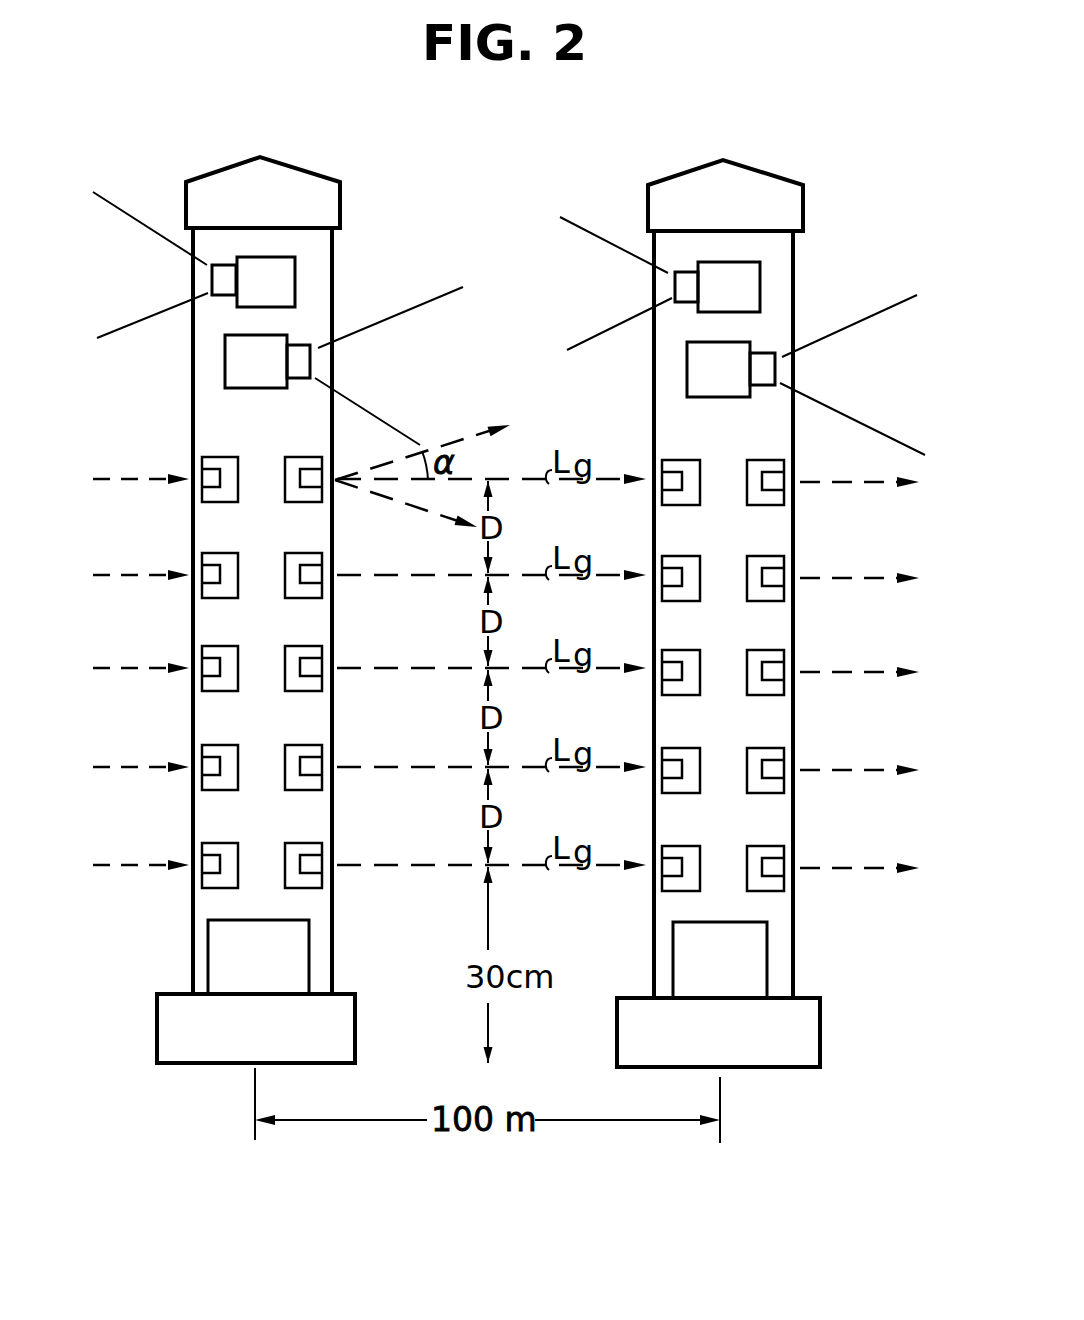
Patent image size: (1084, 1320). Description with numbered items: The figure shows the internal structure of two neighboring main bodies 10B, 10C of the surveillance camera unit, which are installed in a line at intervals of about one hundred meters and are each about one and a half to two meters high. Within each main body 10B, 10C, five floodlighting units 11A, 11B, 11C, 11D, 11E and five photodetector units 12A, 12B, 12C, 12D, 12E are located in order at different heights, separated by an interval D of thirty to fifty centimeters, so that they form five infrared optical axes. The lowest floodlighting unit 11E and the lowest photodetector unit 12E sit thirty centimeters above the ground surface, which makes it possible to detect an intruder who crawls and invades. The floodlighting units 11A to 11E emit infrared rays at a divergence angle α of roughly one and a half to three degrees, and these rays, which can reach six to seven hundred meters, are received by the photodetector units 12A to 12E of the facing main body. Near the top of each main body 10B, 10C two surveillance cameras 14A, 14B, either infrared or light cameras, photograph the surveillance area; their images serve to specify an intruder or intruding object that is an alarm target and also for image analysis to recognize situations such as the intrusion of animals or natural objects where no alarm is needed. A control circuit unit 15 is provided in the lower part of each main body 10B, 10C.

The main body 10B is at (340, 203).
The main body 10C is at (803, 207).
The floodlighting unit 11A is at (301, 456).
The floodlighting unit 11B is at (302, 552).
The floodlighting unit 11C is at (302, 645).
The floodlighting unit 11D is at (302, 744).
The floodlighting unit 11E is at (302, 842).
The photodetector unit 12A is at (206, 456).
The photodetector unit 12B is at (207, 552).
The photodetector unit 12C is at (207, 645).
The photodetector unit 12D is at (207, 744).
The photodetector unit 12E is at (207, 842).
The surveillance camera 14A is at (295, 275).
The surveillance camera 14B is at (240, 360).
The control circuit unit 15 is at (225, 945).